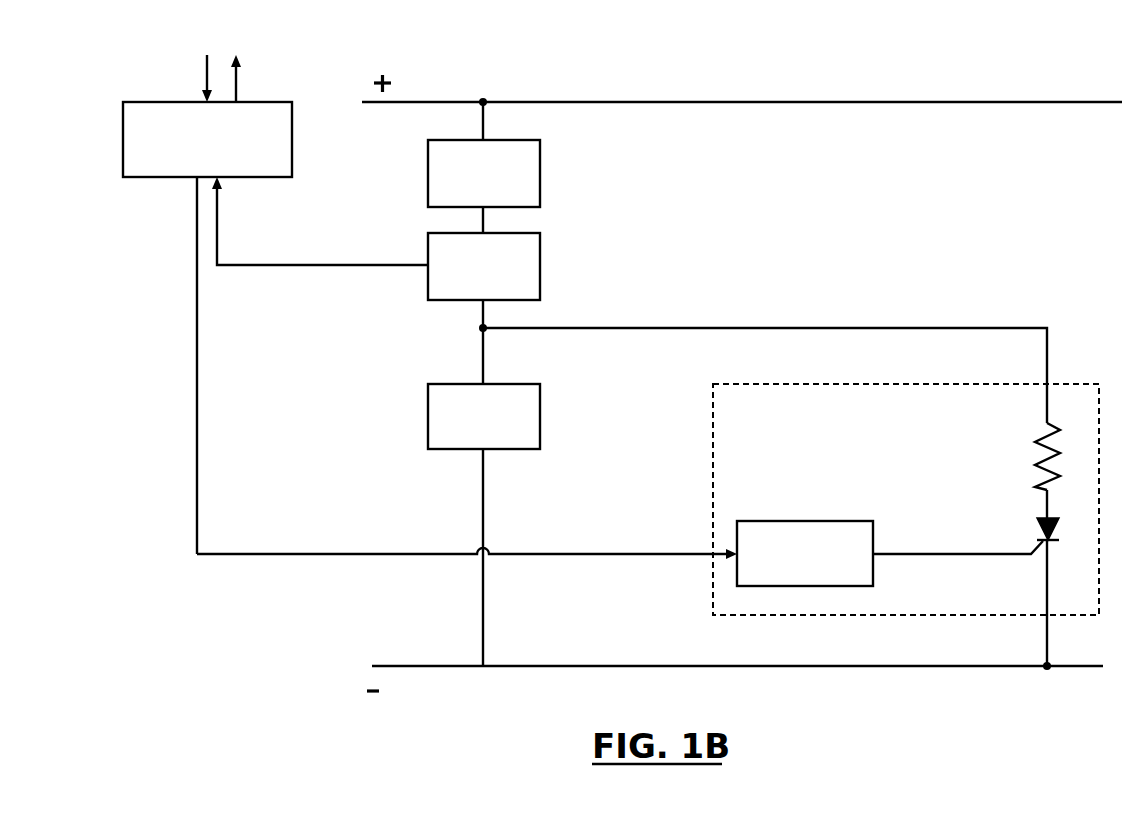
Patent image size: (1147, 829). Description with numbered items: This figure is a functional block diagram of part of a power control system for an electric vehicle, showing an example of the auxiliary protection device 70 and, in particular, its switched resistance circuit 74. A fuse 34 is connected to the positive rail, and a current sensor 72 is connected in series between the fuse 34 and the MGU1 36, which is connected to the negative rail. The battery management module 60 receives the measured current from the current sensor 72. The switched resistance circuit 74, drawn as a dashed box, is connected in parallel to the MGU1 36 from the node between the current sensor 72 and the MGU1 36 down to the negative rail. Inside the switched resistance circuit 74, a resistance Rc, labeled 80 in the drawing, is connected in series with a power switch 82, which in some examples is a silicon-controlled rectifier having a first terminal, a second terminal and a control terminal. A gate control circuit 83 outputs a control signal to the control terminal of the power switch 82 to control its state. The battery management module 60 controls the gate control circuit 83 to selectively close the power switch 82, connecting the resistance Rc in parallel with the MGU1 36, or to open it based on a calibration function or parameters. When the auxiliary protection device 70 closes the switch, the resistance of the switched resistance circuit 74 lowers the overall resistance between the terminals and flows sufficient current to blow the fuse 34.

The battery management module 60 is at (123, 143).
The fuse 34 is at (428, 163).
The current sensor 72 is at (428, 252).
The MGU1 36 is at (428, 405).
The auxiliary protection device 70 is at (1034, 227).
The switched resistance circuit 74 is at (760, 384).
The resistor Rc 80 is at (1036, 442).
The power switch 82 is at (1040, 523).
The gate control circuit 83 is at (810, 521).